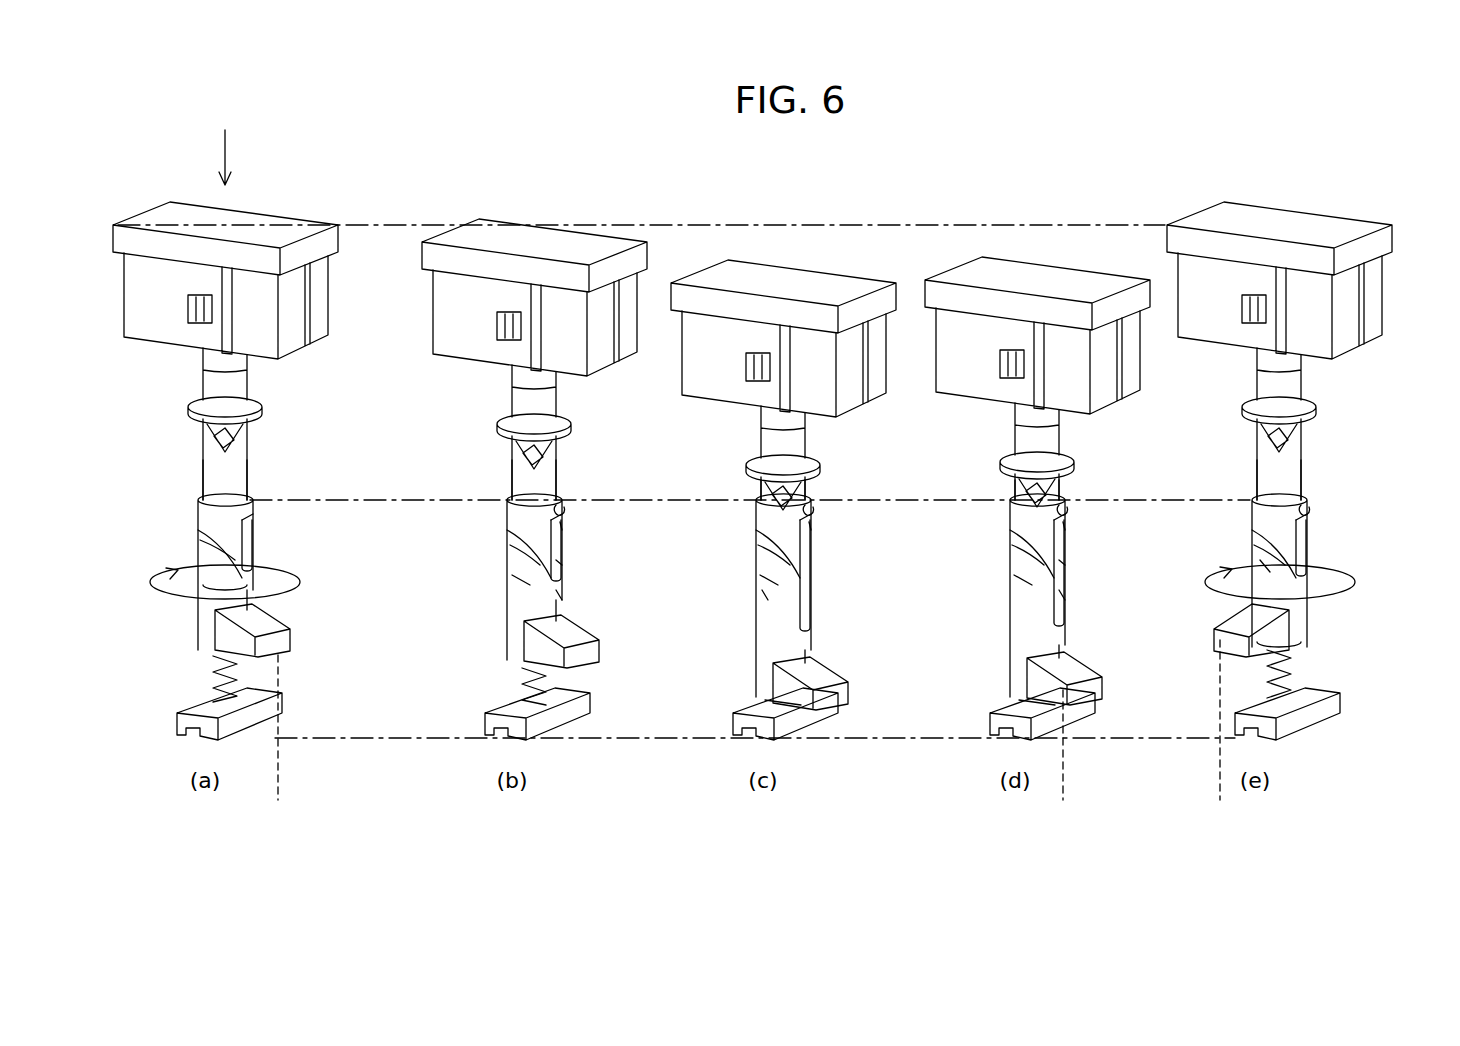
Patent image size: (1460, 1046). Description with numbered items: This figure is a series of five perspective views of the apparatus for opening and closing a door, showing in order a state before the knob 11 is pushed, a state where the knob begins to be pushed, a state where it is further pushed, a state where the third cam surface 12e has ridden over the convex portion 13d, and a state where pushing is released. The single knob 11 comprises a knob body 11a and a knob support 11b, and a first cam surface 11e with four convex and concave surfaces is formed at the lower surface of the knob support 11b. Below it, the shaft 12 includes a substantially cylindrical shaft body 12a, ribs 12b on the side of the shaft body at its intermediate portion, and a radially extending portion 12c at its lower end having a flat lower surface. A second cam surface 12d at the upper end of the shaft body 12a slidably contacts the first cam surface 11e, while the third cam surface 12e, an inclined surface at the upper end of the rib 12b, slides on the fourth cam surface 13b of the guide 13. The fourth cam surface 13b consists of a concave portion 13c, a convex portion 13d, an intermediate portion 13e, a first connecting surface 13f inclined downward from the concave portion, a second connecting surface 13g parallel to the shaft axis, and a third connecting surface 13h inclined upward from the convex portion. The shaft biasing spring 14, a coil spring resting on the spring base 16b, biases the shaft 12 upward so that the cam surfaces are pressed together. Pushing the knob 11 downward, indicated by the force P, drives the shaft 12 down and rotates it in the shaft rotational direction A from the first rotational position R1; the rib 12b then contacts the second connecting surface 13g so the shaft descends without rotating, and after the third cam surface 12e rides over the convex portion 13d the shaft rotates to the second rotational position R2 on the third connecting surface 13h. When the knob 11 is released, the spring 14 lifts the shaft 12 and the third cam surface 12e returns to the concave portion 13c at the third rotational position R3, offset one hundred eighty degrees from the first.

The knob 11 is at (118, 243).
The knob body 11a is at (135, 290).
The knob support 11b is at (250, 393).
The first cam surface 11e is at (205, 447).
The shaft 12 is at (205, 467).
The shaft body 12a is at (247, 468).
The rib 12b is at (260, 570).
The radially extending portion 12c is at (270, 625).
The second cam surface 12d is at (250, 430).
The third cam surface 12e is at (256, 522).
The guide 13 is at (200, 512).
The fourth cam surface 13b is at (210, 555).
The concave portion 13c is at (564, 518).
The convex portion 13d is at (568, 595).
The intermediate portion 13e is at (214, 526).
The first connecting surface 13f is at (562, 525).
The second connecting surface 13g is at (570, 565).
The third connecting surface 13h is at (520, 580).
The shaft biasing spring 14 is at (215, 677).
The spring base 16b is at (282, 700).
The shaft rotational direction A is at (170, 597).
The pressing force P is at (224, 140).
The first rotational position R1 is at (282, 744).
The second rotational position R2 is at (1067, 761).
The third rotational position R3 is at (1231, 736).